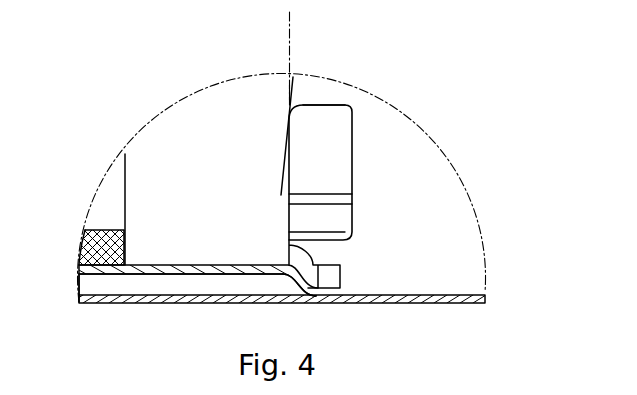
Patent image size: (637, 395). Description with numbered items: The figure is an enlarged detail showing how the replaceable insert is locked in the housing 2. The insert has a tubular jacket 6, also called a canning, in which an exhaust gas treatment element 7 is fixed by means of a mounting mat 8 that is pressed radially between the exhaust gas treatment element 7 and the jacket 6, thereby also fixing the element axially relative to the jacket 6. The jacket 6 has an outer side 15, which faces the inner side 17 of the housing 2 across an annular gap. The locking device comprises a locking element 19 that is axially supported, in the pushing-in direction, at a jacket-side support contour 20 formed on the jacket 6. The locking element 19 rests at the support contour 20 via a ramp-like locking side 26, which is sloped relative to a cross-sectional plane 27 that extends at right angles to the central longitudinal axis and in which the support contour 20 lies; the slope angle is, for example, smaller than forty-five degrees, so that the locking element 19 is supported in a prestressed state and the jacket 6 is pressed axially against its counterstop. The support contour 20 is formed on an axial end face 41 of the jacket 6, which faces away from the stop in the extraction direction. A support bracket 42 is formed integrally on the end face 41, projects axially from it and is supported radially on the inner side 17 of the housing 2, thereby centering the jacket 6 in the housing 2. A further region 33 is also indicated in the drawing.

The housing 2 is at (108, 297).
The jacket 6 is at (185, 270).
The exhaust gas treatment element 7 is at (102, 208).
The mounting mat 8 is at (85, 240).
The outer side of the jacket 15 is at (232, 278).
The inner side of the housing 17 is at (253, 291).
The locking element 19 is at (352, 163).
The support contour 20 is at (296, 96).
The ramp-like locking side 26 is at (296, 125).
The cross-sectional plane 27 is at (287, 45).
The gap 33 is at (215, 285).
The axial end face of the jacket 41 is at (291, 98).
The support bracket 42 is at (334, 277).